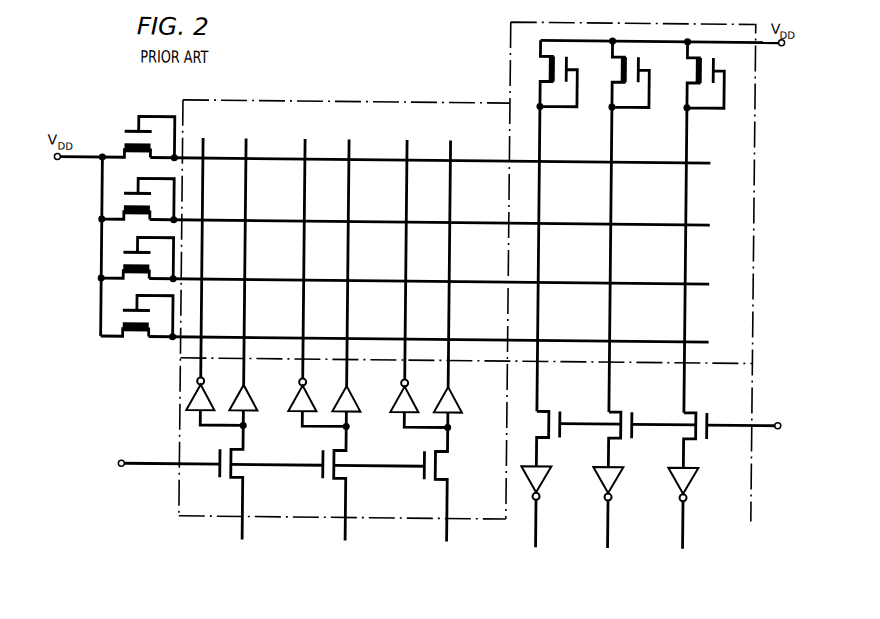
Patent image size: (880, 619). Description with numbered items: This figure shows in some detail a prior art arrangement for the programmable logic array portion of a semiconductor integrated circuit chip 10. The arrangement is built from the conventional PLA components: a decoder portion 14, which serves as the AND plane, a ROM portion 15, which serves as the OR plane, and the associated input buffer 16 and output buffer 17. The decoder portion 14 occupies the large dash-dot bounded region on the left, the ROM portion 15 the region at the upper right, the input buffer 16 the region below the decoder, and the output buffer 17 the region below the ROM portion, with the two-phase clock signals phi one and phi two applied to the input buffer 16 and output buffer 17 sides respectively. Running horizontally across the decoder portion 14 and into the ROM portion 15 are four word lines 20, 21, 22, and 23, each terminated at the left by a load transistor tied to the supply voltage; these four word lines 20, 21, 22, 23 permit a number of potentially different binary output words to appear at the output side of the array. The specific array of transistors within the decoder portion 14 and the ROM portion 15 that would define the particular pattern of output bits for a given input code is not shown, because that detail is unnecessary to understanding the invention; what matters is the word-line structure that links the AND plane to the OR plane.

The semiconductor integrated circuit chip 10 is at (327, 90).
The decoder portion 14 is at (424, 114).
The ROM portion 15 is at (520, 61).
The input buffer 16 is at (194, 502).
The output buffer 17 is at (731, 497).
The word line 20 is at (439, 162).
The word line 21 is at (438, 224).
The word line 22 is at (438, 283).
The word line 23 is at (438, 341).